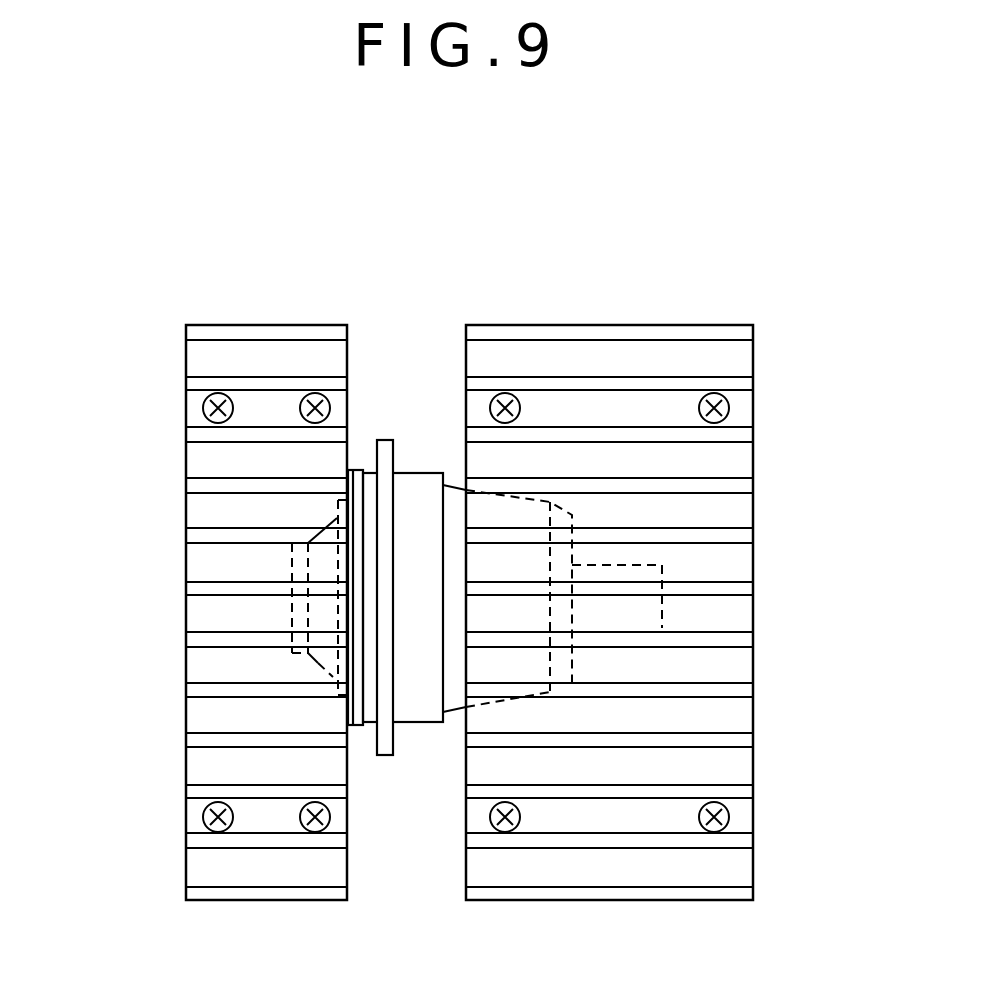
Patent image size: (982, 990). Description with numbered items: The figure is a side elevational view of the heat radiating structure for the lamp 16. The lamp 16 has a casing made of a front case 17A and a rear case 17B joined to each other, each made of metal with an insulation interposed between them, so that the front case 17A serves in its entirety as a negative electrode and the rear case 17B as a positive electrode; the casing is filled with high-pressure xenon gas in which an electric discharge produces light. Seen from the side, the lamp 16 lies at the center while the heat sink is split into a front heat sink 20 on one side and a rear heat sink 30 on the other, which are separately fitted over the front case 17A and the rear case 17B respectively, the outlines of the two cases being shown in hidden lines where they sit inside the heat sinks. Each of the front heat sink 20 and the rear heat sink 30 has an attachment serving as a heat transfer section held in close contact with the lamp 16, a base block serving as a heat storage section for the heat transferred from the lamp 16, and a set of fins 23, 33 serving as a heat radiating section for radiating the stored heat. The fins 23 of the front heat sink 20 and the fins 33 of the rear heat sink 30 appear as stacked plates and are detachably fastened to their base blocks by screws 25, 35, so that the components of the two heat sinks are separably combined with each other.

The front heat sink 20 is at (290, 300).
The fins 23 is at (255, 385).
The screws 25 is at (203, 408).
The rear heat sink 30 is at (556, 300).
The fins 33 is at (682, 385).
The screws 35 is at (729, 410).
The lamp 16 is at (415, 473).
The front case 17A is at (318, 663).
The rear case 17B is at (503, 700).